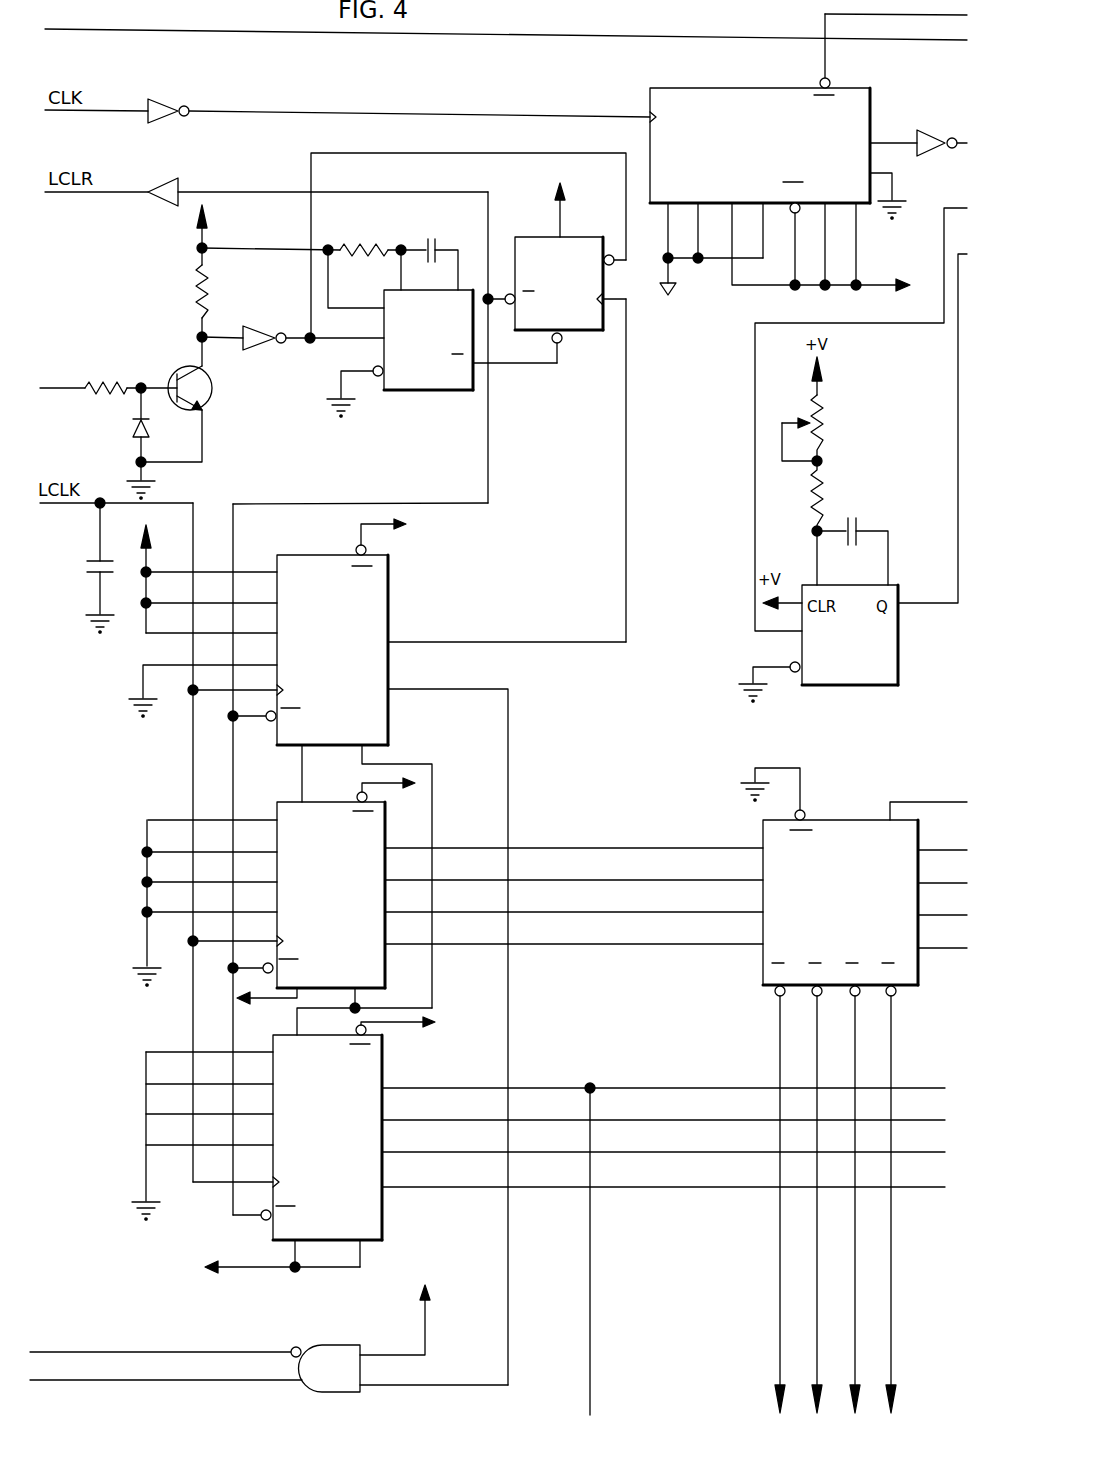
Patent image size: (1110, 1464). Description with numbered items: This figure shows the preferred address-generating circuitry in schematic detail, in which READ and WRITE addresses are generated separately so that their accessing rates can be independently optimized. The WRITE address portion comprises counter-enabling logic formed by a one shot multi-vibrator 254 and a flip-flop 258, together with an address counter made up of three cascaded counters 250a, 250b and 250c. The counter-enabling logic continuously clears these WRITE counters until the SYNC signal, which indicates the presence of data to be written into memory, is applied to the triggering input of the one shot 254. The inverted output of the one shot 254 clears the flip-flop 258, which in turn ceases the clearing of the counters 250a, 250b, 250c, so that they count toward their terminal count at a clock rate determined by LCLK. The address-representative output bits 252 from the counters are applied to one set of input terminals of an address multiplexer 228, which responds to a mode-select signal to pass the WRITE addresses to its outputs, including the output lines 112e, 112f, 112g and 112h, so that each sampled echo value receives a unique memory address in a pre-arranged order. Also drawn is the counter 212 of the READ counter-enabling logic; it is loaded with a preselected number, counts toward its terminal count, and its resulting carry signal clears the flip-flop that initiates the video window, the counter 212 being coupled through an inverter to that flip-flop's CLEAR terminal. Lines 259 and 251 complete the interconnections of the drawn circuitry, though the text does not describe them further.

The counter 212 is at (748, 92).
The address-representative output bits 252 is at (130, 384).
The one shot multi-vibrator 254 is at (430, 391).
The flip-flop 258 is at (583, 332).
The line 259 is at (490, 293).
The counter 250a is at (392, 578).
The counter 250b is at (284, 802).
The counter 250c is at (388, 1062).
The address multiplexer 228 is at (760, 968).
The input lines 251 is at (113, 1382).
The output 112e is at (897, 1212).
The output 112f is at (855, 1270).
The output 112g is at (817, 1313).
The output 112h is at (778, 1318).